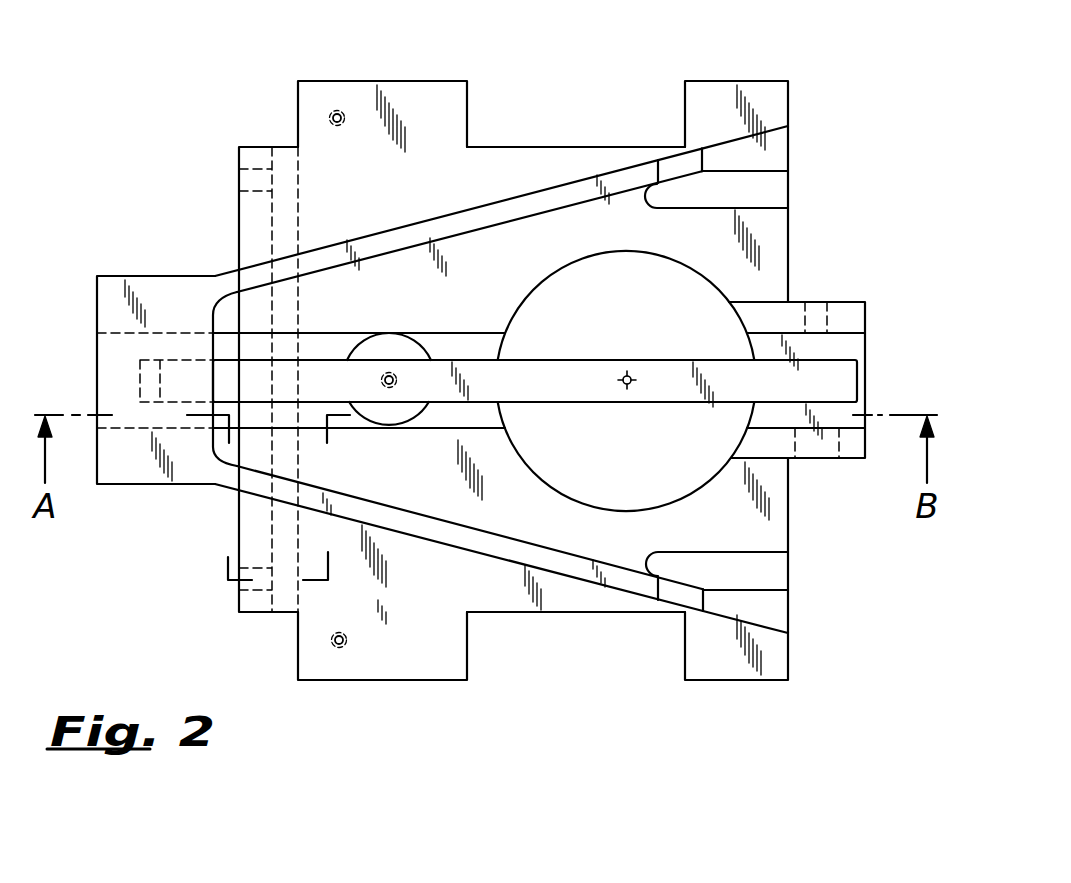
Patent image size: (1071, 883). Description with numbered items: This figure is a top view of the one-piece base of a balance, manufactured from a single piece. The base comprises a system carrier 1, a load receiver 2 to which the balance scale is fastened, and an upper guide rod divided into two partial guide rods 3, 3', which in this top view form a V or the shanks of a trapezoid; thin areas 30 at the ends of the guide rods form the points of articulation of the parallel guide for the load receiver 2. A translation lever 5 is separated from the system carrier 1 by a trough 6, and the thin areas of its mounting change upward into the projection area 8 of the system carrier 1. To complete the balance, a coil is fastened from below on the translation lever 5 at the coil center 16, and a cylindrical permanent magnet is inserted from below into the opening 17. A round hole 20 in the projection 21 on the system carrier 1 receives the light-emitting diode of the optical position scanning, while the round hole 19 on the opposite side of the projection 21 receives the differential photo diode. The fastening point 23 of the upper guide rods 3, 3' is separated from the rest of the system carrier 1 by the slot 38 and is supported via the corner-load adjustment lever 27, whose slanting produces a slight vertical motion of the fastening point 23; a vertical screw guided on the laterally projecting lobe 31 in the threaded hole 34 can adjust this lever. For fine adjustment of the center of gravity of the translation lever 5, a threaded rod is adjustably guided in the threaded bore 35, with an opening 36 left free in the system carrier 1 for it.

The system carrier 1 is at (512, 590).
The load receiver 2 is at (113, 305).
The partial guide rod 3 is at (459, 572).
The partial guide rod 3' is at (458, 186).
The translation lever 5 is at (332, 345).
The trough 6 is at (115, 352).
The projection area 8 is at (262, 614).
The coil center 16 is at (632, 375).
The opening 17 is at (560, 295).
The round hole 19 is at (817, 447).
The round hole 20 is at (815, 310).
The projection 21 is at (850, 312).
The fastening point 23 is at (725, 160).
The corner-load adjustment lever 27 is at (716, 100).
The thin areas 30 is at (250, 268).
The laterally projecting lobe 31 is at (433, 100).
The threaded hole 34 is at (335, 111).
The threaded bore 35 is at (392, 377).
The opening 36 is at (385, 355).
The slot 38 is at (763, 197).